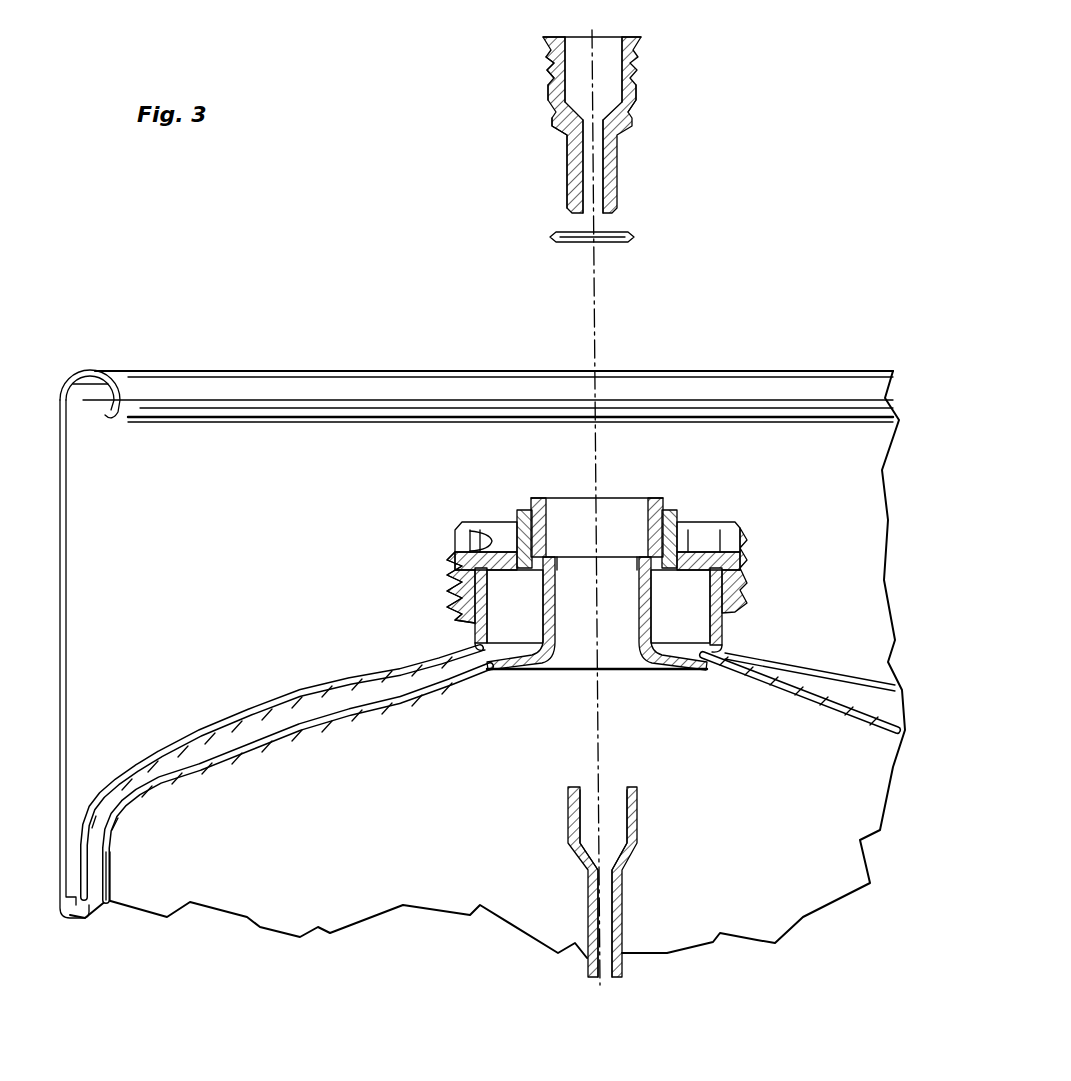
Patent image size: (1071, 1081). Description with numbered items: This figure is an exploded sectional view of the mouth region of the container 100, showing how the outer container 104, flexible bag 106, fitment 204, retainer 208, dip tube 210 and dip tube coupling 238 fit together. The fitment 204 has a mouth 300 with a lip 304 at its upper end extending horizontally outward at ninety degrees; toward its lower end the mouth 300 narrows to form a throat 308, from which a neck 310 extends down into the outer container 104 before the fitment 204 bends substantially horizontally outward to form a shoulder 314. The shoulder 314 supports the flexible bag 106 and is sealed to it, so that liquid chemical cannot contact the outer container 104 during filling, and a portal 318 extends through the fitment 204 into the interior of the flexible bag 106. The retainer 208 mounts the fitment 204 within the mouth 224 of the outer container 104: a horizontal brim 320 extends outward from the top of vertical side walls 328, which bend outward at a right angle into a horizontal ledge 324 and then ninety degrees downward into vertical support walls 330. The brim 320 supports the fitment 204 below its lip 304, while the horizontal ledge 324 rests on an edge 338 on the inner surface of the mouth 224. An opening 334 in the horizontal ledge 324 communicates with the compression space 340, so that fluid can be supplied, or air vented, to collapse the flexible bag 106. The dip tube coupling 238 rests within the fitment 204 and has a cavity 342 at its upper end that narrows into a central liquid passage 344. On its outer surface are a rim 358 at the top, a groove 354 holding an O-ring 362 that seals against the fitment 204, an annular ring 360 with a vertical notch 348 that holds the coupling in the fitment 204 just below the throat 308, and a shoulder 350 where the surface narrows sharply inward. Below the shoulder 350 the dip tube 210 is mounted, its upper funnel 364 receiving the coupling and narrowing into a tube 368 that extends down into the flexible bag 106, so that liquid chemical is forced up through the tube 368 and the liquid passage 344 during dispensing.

The tank assembly 100 is at (160, 353).
The outer container 104 is at (98, 783).
The flexible bag 106 is at (217, 758).
The fitment 204 is at (680, 588).
The retainer 208 is at (447, 572).
The dip tube 210 is at (562, 858).
The mouth of outer container 224 is at (735, 598).
The dip tube coupling 238 is at (527, 72).
The mouth 300 is at (675, 530).
The lip 304 is at (662, 512).
The throat 308 is at (630, 560).
The neck 310 is at (548, 615).
The shoulder 314 is at (475, 624).
The portal 318 is at (613, 510).
The brim 320 is at (527, 510).
The horizontal ledge 324 is at (475, 545).
The side walls 328 is at (512, 522).
The support walls 330 is at (448, 587).
The opening 334 is at (500, 527).
The edge 338 is at (455, 560).
The compression space 340 is at (106, 846).
The cavity 342 is at (605, 68).
The liquid passage 344 is at (598, 182).
The notch 348 is at (637, 103).
The shoulder 350 is at (557, 131).
The groove 354 is at (550, 67).
The rim 358 is at (637, 36).
The annular ring 360 is at (548, 106).
The O-ring 362 is at (632, 238).
The funnel 364 is at (637, 790).
The tube 368 is at (621, 903).